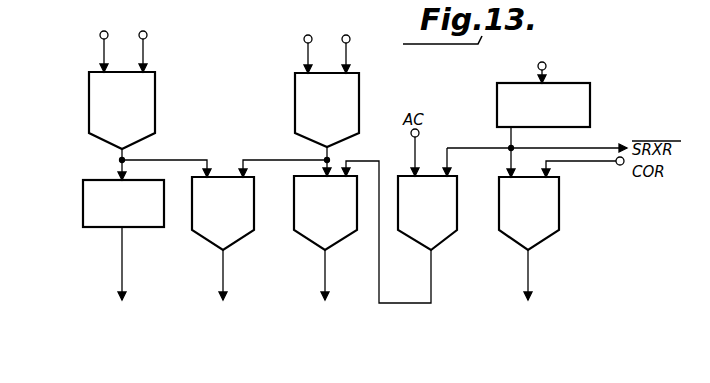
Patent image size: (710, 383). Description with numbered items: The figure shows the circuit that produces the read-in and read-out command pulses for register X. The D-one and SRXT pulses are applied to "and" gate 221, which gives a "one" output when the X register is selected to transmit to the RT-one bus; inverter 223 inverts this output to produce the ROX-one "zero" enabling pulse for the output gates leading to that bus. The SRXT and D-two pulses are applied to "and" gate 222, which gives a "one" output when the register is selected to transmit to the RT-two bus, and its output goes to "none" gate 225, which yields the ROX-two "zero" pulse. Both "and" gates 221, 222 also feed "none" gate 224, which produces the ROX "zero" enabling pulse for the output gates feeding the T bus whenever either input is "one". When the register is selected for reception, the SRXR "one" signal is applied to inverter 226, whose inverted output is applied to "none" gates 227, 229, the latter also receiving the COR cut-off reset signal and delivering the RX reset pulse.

The "and" gate 221 is at (155, 103).
The "and" gate 222 is at (359, 94).
The inverter 223 is at (101, 227).
The "none" gate 224 is at (203, 239).
The "none" gate 225 is at (302, 239).
The inverter 226 is at (590, 106).
The "none" gate 227 is at (450, 240).
The "none" gate 229 is at (543, 238).